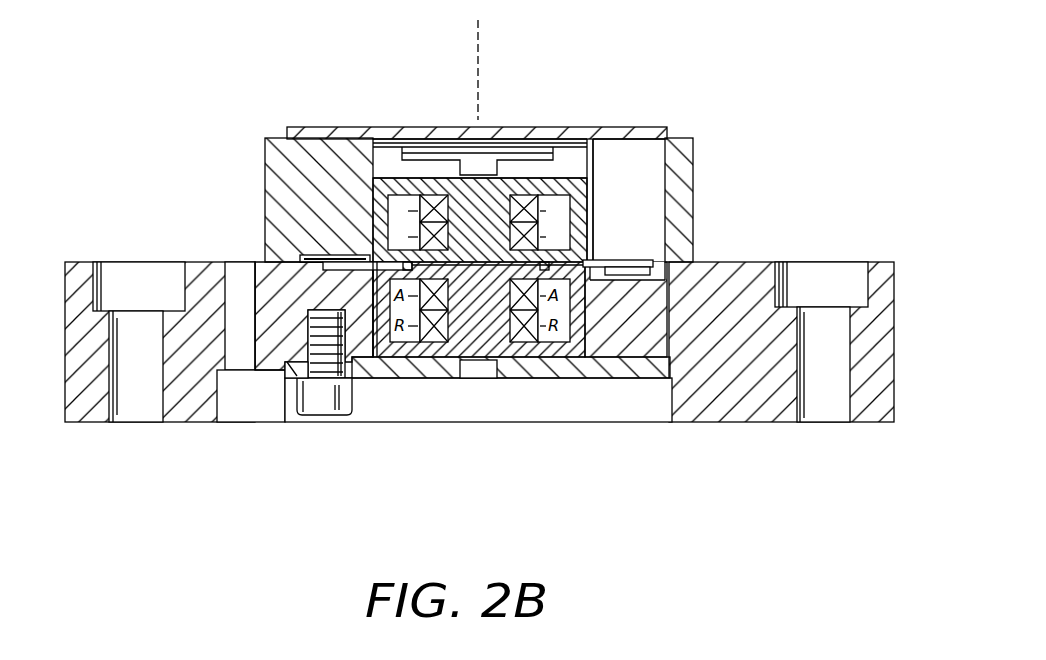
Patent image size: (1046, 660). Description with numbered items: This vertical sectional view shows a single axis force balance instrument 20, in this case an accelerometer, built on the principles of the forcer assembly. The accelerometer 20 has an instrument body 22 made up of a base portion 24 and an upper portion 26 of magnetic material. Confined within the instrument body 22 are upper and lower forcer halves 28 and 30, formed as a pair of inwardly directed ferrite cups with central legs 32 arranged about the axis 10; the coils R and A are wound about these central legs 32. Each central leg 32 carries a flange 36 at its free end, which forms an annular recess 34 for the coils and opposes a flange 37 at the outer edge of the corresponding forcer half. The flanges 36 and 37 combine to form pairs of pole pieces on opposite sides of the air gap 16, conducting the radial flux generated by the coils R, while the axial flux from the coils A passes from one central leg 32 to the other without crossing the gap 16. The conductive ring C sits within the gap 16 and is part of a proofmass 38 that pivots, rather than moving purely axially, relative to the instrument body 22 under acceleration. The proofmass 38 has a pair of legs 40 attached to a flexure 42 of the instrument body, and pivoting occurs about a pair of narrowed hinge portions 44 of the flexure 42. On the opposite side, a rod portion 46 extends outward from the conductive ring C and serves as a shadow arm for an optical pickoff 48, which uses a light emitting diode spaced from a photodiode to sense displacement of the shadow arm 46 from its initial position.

The axis 10 is at (478, 52).
The air gap 16 is at (372, 291).
The single axis force balance instrument 20 is at (640, 92).
The instrument body 22 is at (505, 319).
The base portion 24 is at (888, 286).
The upper portion 26 is at (700, 138).
The upper forcer half 28 is at (484, 232).
The lower forcer half 30 is at (470, 370).
The central legs 32 is at (532, 137).
The annular recess 34 is at (443, 165).
The flange 36 is at (383, 272).
The flange 37 is at (373, 245).
The proofmass 38 is at (595, 220).
The legs 40 is at (375, 262).
The flexure 42 is at (320, 260).
The narrowed hinge portions 44 is at (338, 268).
The rod portion 46 is at (605, 258).
The pickoff 48 is at (644, 258).
The conductive ring C is at (595, 233).